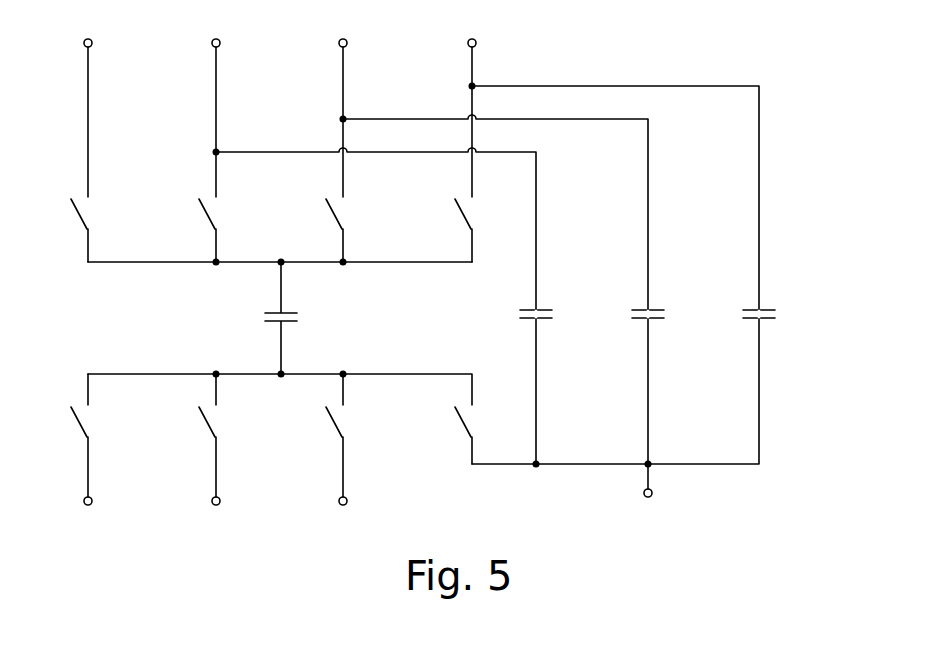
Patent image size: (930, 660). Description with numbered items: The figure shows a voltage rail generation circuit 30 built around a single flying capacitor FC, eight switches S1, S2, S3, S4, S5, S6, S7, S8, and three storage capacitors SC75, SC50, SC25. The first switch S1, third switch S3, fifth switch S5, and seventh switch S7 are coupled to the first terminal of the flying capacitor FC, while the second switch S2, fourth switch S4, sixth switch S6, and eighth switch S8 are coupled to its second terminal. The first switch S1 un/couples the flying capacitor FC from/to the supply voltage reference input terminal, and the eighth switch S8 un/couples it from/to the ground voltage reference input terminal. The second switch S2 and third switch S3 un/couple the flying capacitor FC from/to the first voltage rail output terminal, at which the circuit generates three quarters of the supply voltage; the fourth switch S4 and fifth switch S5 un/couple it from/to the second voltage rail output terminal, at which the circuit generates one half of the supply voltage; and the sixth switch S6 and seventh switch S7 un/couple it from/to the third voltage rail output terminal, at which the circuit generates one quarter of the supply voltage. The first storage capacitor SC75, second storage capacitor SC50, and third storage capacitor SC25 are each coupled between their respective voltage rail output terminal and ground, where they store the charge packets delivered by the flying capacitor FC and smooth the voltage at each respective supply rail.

The voltage rail generation circuit 30 is at (429, 308).
The first switch S1 is at (94, 230).
The second switch S2 is at (94, 452).
The third switch S3 is at (222, 230).
The fourth switch S4 is at (222, 452).
The fifth switch S5 is at (348, 230).
The sixth switch S6 is at (348, 452).
The seventh switch S7 is at (477, 230).
The eighth switch S8 is at (477, 435).
The flying capacitor FC is at (293, 318).
The first storage capacitor SC75 is at (559, 315).
The second storage capacitor SC50 is at (671, 315).
The third storage capacitor SC25 is at (782, 315).